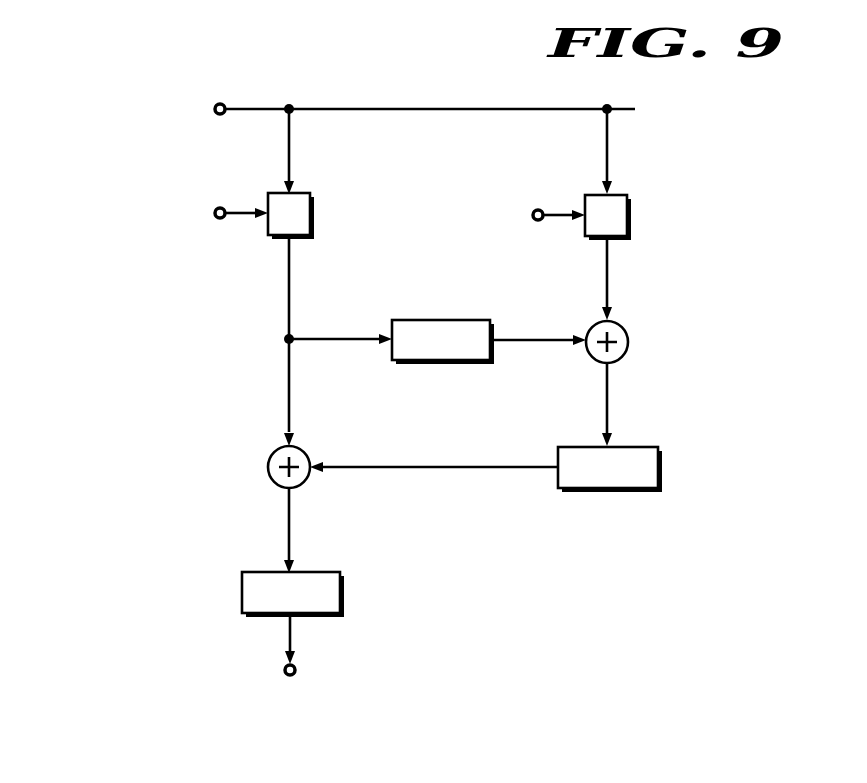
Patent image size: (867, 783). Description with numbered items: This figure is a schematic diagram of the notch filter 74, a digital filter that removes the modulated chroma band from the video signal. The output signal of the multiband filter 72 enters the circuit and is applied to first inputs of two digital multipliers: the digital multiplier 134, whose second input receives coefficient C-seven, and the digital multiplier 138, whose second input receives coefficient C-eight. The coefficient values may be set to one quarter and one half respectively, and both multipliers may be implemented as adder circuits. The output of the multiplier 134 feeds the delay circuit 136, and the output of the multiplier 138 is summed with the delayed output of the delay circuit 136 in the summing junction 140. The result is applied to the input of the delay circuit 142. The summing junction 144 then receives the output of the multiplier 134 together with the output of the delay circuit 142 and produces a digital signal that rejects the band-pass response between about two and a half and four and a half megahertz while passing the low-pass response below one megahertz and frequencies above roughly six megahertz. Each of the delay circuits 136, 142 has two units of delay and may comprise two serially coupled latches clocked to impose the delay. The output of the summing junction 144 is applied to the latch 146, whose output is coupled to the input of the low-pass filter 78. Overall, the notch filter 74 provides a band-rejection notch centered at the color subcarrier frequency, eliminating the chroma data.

The multiband filter 72 is at (349, 109).
The notch filter 74 is at (639, 608).
The low-pass filter 78 is at (291, 678).
The digital multiplier 134 is at (303, 192).
The delay circuit 136 is at (432, 320).
The digital multiplier 138 is at (624, 194).
The summing junction 140 is at (628, 338).
The delay circuit 142 is at (662, 463).
The summing junction 144 is at (268, 462).
The latch 146 is at (343, 588).